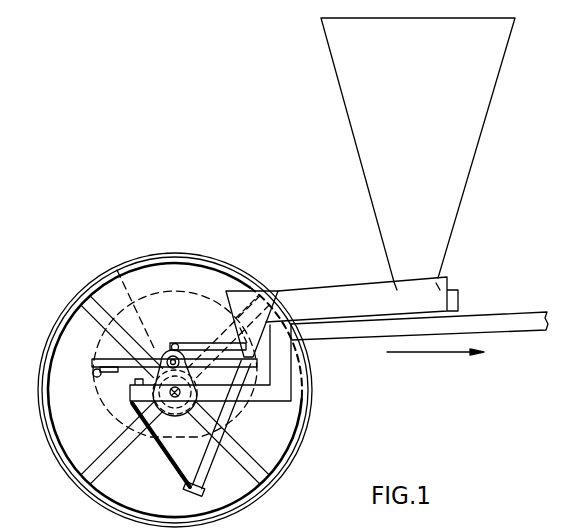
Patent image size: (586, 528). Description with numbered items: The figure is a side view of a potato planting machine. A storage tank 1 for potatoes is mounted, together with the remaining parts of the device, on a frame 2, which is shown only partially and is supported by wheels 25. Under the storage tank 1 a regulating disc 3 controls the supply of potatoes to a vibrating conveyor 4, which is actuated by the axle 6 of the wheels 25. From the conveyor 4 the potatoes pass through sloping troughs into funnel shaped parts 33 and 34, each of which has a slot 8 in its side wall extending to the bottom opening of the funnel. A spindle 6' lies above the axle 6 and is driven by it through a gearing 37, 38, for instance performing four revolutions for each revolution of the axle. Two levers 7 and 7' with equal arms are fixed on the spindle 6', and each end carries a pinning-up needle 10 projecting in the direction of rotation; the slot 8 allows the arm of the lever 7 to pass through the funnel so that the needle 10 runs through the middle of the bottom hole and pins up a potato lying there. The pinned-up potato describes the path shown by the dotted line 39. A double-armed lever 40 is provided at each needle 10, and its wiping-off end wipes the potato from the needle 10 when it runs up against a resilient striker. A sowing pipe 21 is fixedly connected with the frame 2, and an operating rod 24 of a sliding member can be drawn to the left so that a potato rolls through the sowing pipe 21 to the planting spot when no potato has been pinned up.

The storage tank 1 is at (480, 139).
The frame 2 is at (514, 318).
The regulating disc 3 is at (388, 280).
The vibrating conveyor 4 is at (345, 296).
The axle 6 is at (175, 394).
The spindle 6' is at (164, 349).
The lever 7 is at (159, 363).
The lever 7' is at (109, 369).
The slot 8 is at (228, 304).
The pinning-up needle 10 is at (93, 376).
The sowing pipe 21 is at (202, 466).
The operating rod 24 is at (213, 346).
The wheels 25 is at (286, 465).
The funnel shaped part 33 is at (251, 292).
The funnel shaped part 34 is at (243, 335).
The gearing 37 is at (118, 278).
The gearing 38 is at (161, 445).
The path 39 is at (178, 286).
The double-armed lever 40 is at (129, 392).